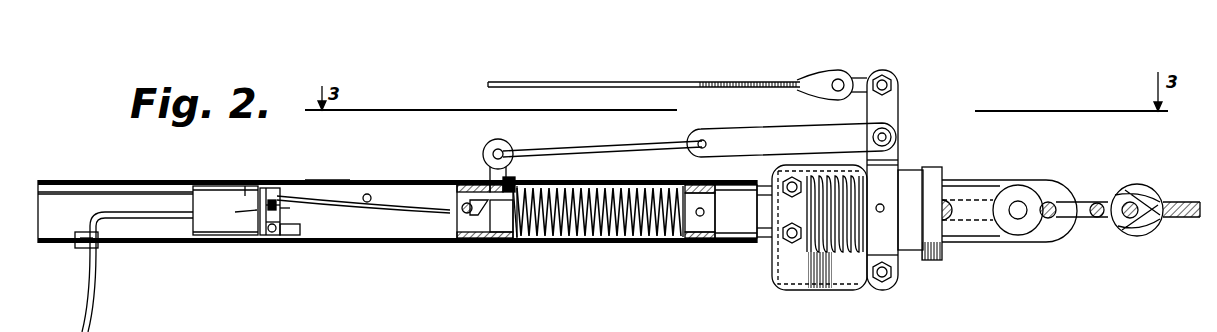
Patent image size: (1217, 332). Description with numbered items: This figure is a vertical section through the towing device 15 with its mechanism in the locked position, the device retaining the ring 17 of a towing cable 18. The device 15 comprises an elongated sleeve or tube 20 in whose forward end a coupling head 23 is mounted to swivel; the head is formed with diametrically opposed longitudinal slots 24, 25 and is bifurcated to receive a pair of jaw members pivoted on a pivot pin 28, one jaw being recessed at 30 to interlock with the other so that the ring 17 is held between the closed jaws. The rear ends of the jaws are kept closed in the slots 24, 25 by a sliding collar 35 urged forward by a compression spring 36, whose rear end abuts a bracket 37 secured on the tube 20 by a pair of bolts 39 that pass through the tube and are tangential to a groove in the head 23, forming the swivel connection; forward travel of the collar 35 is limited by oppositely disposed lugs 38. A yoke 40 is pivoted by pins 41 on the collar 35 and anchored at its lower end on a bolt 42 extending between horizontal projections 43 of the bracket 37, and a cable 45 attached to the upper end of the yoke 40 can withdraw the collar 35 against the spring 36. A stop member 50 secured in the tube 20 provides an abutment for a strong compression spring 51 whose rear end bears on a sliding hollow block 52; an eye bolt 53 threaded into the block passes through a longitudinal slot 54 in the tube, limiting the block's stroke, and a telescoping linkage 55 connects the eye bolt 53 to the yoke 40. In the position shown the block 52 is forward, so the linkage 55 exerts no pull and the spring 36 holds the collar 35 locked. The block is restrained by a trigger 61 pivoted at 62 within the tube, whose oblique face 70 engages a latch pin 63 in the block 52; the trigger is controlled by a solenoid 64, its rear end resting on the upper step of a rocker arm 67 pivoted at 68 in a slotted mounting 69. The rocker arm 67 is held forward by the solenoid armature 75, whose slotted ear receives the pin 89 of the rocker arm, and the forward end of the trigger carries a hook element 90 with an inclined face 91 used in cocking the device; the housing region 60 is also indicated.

The towing device 15 is at (327, 176).
The ring 17 is at (1096, 203).
The towing cable 18 is at (1150, 198).
The elongated sleeve or tube 20 is at (135, 180).
The coupling head 23 is at (985, 232).
The longitudinal slot 24 is at (968, 198).
The longitudinal slot 25 is at (962, 224).
The pivot pin 28 is at (1020, 200).
The recess 30 is at (1058, 202).
The sliding collar 35 is at (935, 170).
The compression spring 36 is at (830, 250).
The bracket 37 is at (775, 262).
The lugs 38 is at (950, 200).
The bolts 39 is at (788, 190).
The yoke 40 is at (898, 152).
The pins 41 is at (884, 206).
The bolt 42 is at (885, 282).
The horizontal projections 43 is at (845, 280).
The cable 45 is at (686, 81).
The stop member 50 is at (693, 238).
The compression spring 51 is at (600, 238).
The sliding hollow block 52 is at (508, 234).
The eye bolt 53 is at (505, 142).
The longitudinal slot 54 is at (458, 186).
The telescoping linkage 55 is at (690, 130).
The housing 60 is at (245, 190).
The trigger 61 is at (392, 205).
The pivot 62 is at (368, 194).
The latch pin 63 is at (468, 213).
The solenoid 64 is at (210, 190).
The rocker arm 67 is at (278, 195).
The pivot 68 is at (272, 234).
The slotted mounting 69 is at (300, 230).
The oblique face 70 is at (461, 208).
The solenoid armature 75 is at (232, 213).
The pin 89 is at (282, 209).
The hook element 90 is at (487, 238).
The inclined face 91 is at (476, 204).